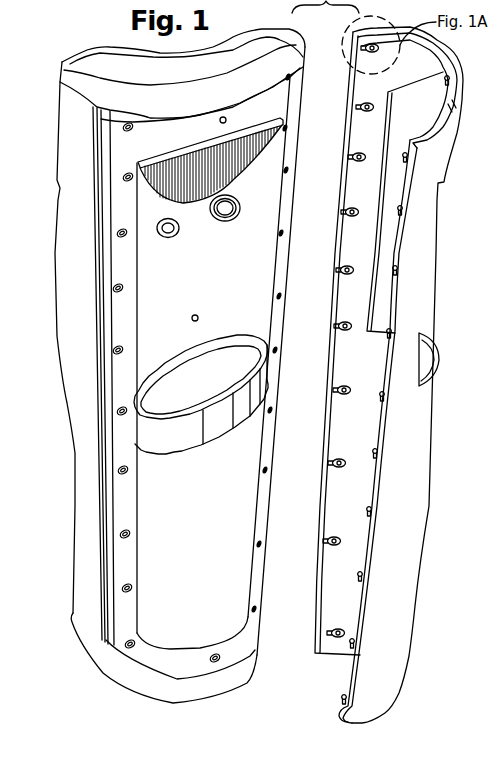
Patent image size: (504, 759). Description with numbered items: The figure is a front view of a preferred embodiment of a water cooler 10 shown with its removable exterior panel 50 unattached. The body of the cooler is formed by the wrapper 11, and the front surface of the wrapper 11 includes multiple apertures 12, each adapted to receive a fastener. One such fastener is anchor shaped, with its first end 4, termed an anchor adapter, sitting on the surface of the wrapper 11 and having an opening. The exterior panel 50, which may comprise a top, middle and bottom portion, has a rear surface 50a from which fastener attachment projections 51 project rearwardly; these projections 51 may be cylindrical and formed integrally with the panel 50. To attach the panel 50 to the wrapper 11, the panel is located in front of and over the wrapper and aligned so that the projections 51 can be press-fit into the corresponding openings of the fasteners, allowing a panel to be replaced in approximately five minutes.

The water cooler 10 is at (52, 150).
The wrapper 11 is at (121, 312).
The first end (anchor adapter) 4 is at (124, 534).
The apertures 12 is at (262, 613).
The exterior panel 50 is at (447, 436).
The rear surface of exterior panel 50a is at (355, 483).
The fastener attachment projections 51 is at (360, 155).